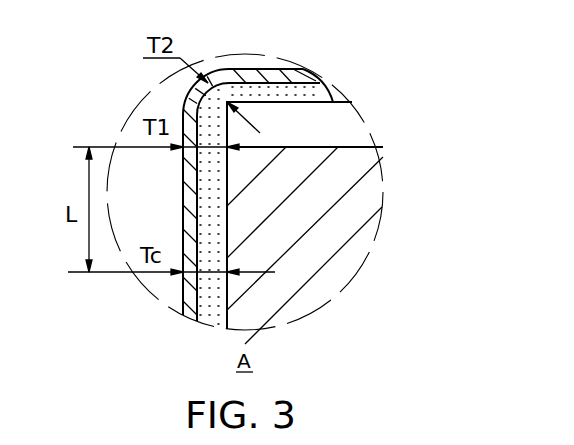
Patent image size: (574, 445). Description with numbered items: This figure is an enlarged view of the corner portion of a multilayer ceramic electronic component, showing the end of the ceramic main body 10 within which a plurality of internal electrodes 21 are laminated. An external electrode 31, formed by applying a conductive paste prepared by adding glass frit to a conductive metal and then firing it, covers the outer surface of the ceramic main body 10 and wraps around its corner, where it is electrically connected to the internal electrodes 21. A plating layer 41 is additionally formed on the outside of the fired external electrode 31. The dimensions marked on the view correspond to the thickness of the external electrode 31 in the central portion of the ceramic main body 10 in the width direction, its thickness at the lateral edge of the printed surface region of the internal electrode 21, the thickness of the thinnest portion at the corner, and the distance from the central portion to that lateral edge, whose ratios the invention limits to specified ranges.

The ceramic main body 10 is at (336, 99).
The internal electrode 21 is at (373, 182).
The external electrode 31 is at (210, 283).
The plating layer 41 is at (190, 302).